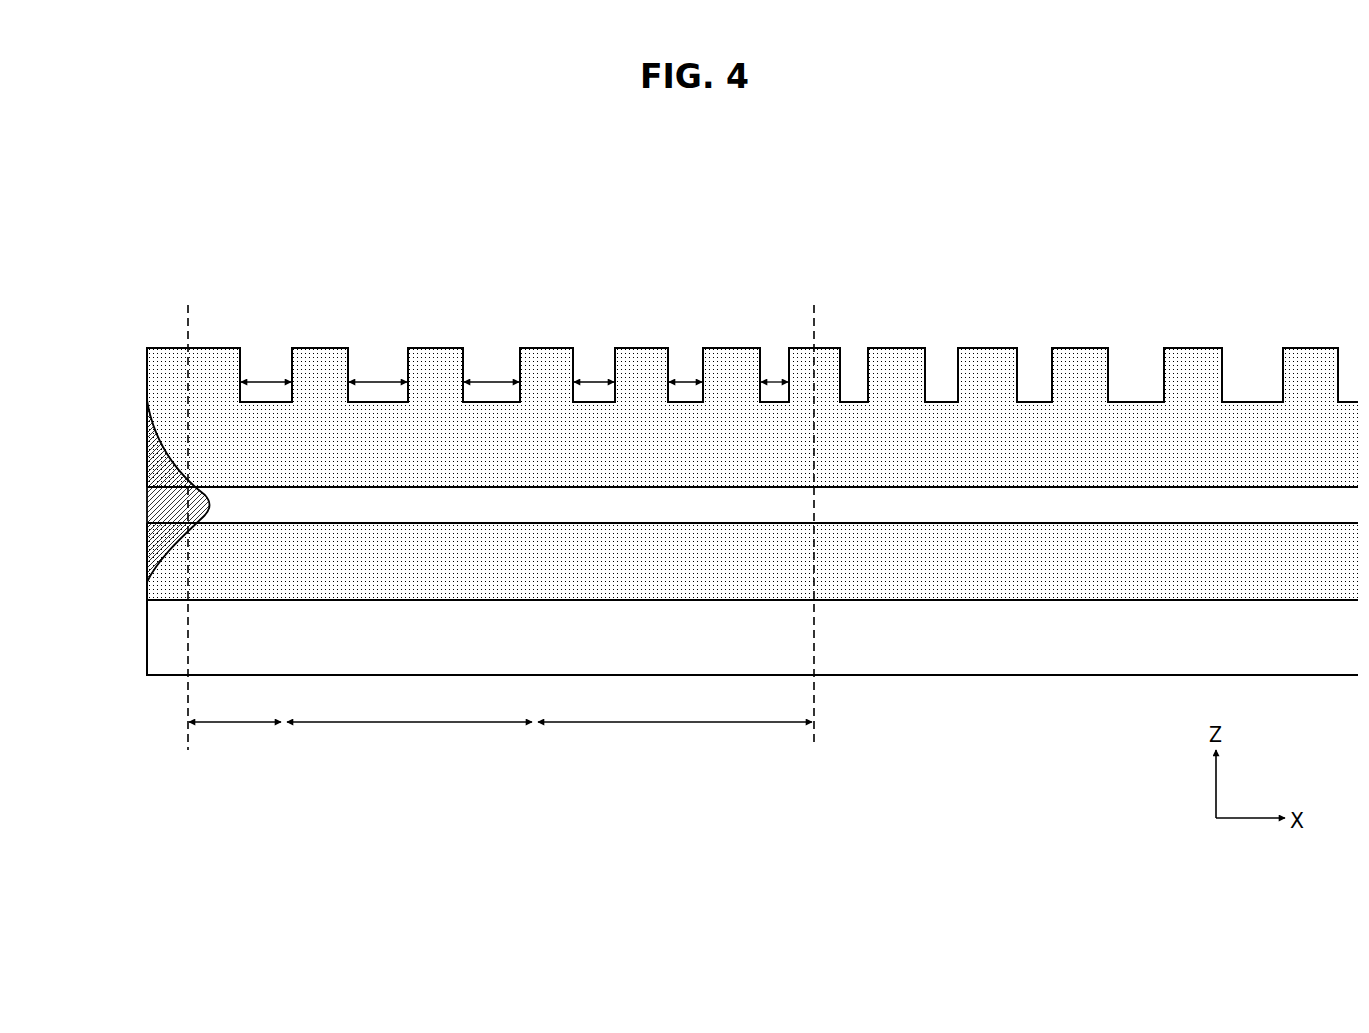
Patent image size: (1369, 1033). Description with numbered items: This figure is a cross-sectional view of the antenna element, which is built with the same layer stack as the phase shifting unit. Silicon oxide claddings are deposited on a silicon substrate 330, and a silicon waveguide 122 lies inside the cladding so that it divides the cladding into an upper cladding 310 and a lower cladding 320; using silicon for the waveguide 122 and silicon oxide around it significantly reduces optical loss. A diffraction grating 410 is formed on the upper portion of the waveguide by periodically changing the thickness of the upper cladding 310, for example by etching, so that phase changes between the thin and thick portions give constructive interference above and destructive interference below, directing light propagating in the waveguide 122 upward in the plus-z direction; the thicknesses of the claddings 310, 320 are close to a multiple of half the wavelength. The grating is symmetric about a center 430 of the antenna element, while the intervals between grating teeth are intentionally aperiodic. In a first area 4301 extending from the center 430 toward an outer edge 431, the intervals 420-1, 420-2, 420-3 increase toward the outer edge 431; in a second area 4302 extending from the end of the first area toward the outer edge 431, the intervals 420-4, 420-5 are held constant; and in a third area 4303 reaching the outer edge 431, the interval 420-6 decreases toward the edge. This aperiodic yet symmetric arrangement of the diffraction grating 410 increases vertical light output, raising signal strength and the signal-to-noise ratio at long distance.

The upper cladding 310 is at (177, 447).
The waveguide 122 is at (225, 506).
The lower cladding 320 is at (177, 577).
The silicon substrate 330 is at (177, 650).
The diffraction grating 410 is at (302, 347).
The interval between diffraction gratings 420-1 is at (775, 380).
The interval between diffraction gratings 420-2 is at (685, 380).
The interval between diffraction gratings 420-3 is at (594, 380).
The interval between diffraction gratings 420-4 is at (491, 380).
The interval between diffraction gratings 420-5 is at (378, 380).
The interval between diffraction gratings 420-6 is at (265, 380).
The center of the antenna element 430 is at (817, 502).
The outer edge of the antenna element 431 is at (189, 500).
The first area 4301 is at (687, 723).
The second area 4302 is at (420, 723).
The third area 4303 is at (233, 723).